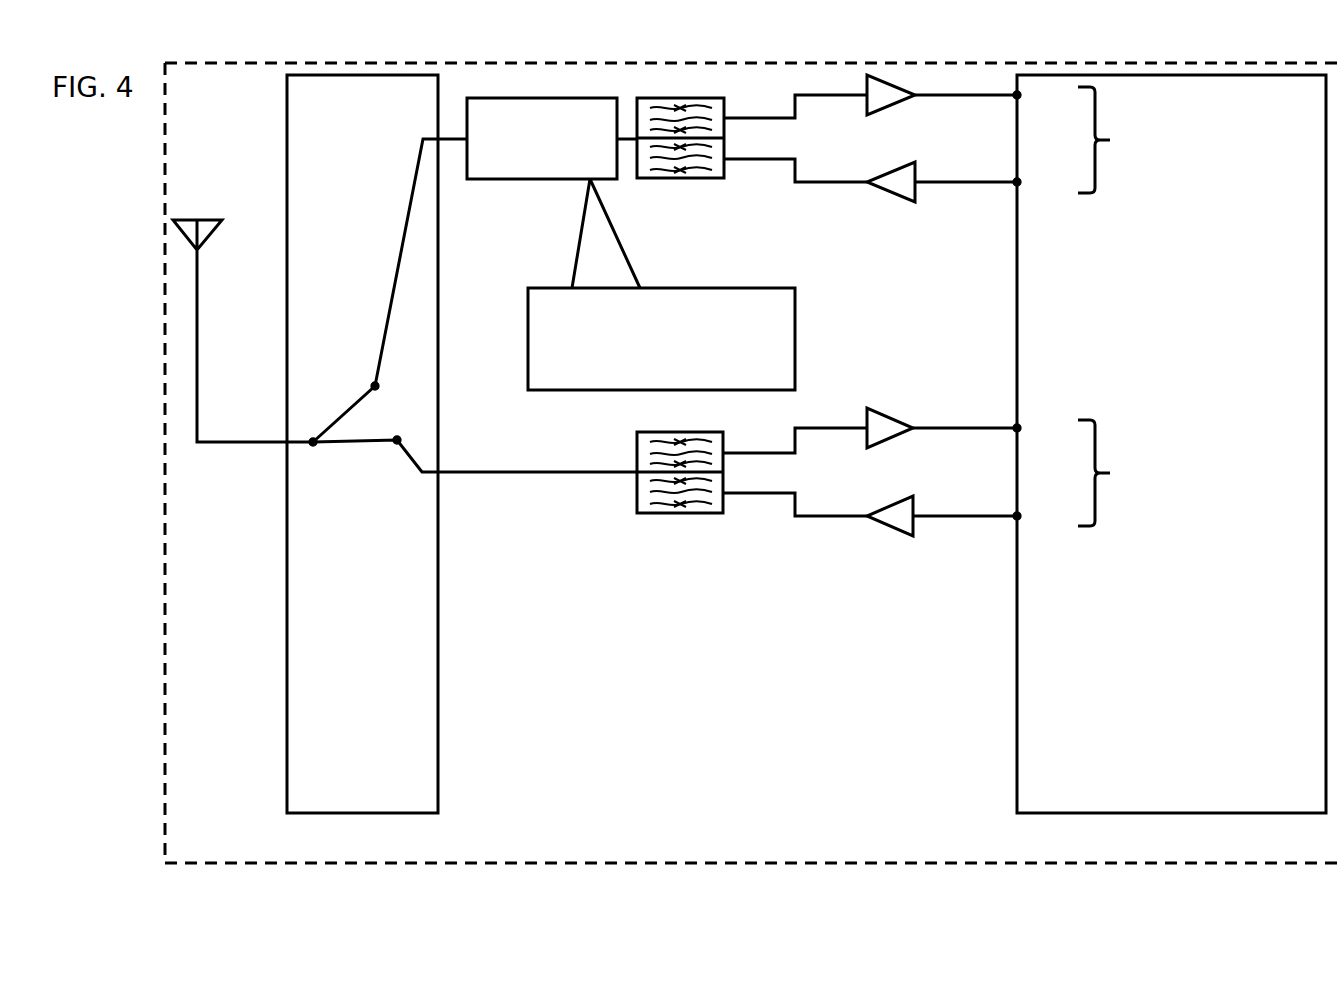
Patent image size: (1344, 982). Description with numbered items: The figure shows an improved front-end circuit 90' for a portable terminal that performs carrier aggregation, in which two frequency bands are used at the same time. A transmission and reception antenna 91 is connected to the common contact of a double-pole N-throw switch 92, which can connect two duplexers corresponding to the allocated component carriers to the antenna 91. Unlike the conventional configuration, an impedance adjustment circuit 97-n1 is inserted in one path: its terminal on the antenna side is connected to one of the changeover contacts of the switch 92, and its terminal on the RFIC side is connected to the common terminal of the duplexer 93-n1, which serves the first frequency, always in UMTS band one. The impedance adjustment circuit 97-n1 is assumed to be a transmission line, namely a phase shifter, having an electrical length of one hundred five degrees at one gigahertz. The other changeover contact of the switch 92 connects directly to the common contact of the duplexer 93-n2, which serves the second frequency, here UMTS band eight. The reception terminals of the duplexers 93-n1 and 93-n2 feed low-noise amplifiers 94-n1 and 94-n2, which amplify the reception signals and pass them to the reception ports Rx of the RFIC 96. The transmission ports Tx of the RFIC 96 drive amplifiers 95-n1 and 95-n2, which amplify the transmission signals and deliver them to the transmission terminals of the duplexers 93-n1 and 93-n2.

The improved front-end circuit 90' is at (724, 463).
The transmission and reception antenna 91 is at (197, 219).
The double-pole N-throw switch 92 is at (362, 814).
The duplexer 93-n1 is at (680, 180).
The duplexer 93-n2 is at (678, 514).
The low-noise amplifier 94-n1 is at (889, 113).
The low-noise amplifier 94-n2 is at (888, 446).
The amplifier 95-n1 is at (888, 201).
The amplifier 95-n2 is at (888, 535).
The RFIC 96 is at (1170, 814).
The impedance adjustment circuit 97-n1 is at (537, 180).